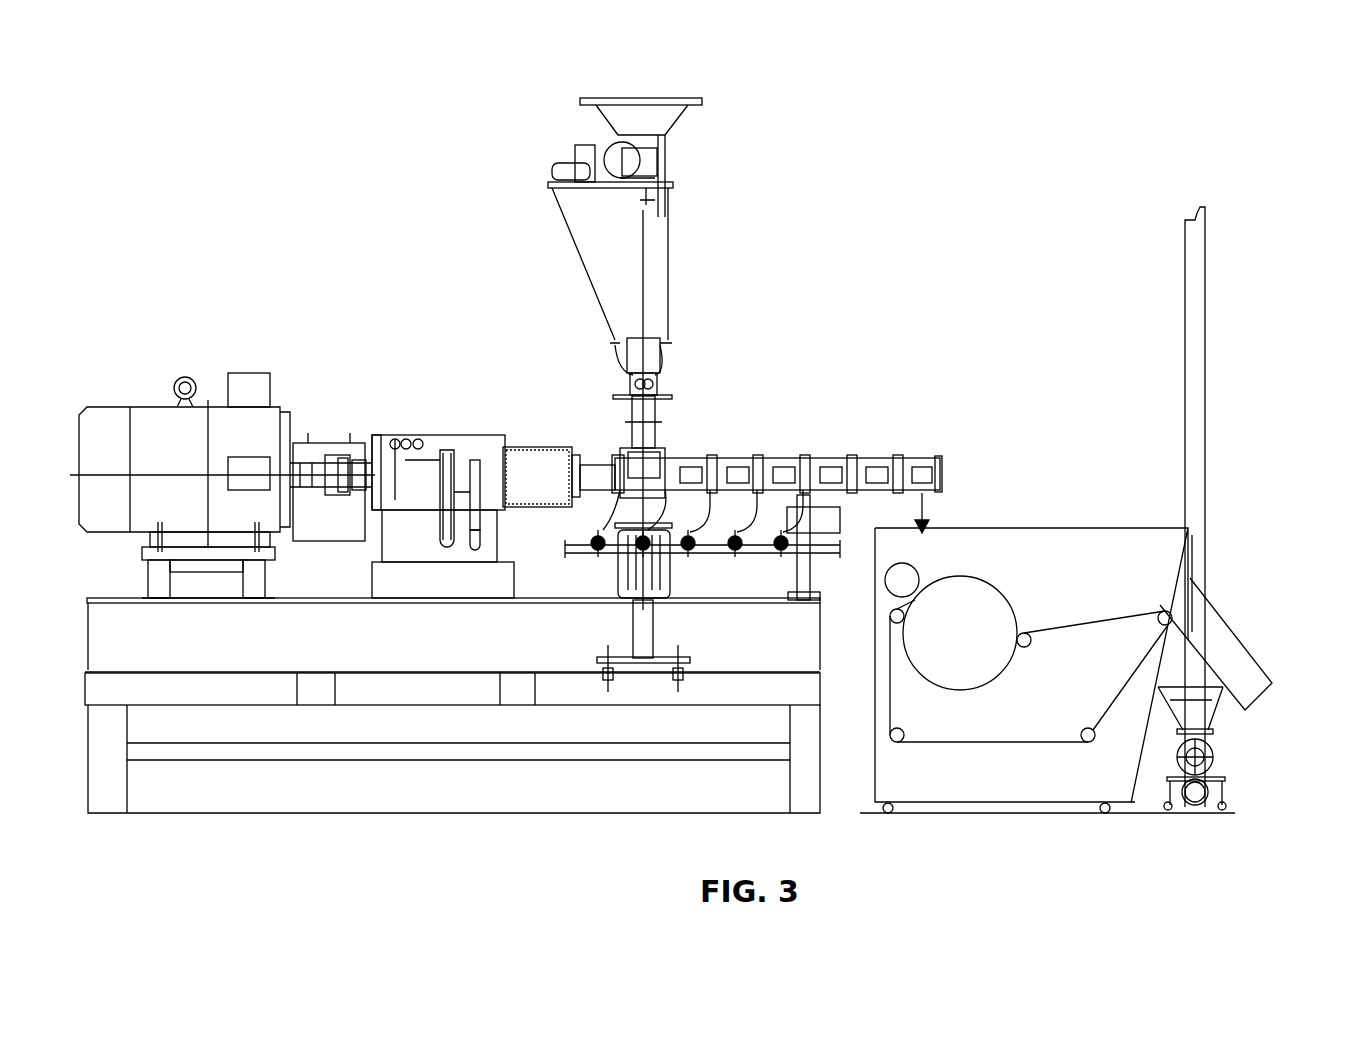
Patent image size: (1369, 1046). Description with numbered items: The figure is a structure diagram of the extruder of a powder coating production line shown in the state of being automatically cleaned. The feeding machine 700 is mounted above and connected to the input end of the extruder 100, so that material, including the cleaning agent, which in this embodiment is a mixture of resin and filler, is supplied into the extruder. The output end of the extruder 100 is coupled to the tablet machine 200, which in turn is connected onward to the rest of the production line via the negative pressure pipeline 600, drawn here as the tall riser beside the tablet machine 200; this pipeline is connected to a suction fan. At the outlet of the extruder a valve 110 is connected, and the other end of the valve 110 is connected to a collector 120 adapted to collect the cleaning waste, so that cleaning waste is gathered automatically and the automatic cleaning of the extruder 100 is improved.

The extruder 100 is at (790, 462).
The feeding machine 700 is at (661, 307).
The tablet machine 200 is at (1013, 546).
The negative pressure pipeline 600 is at (1195, 419).
The valve 110 is at (1203, 592).
The collector 120 is at (1240, 656).